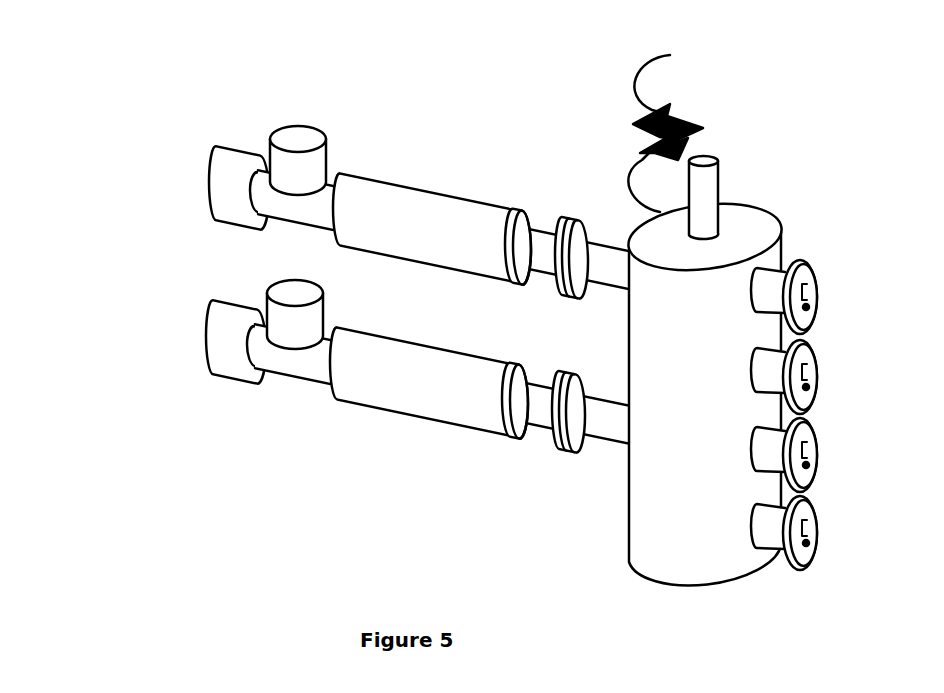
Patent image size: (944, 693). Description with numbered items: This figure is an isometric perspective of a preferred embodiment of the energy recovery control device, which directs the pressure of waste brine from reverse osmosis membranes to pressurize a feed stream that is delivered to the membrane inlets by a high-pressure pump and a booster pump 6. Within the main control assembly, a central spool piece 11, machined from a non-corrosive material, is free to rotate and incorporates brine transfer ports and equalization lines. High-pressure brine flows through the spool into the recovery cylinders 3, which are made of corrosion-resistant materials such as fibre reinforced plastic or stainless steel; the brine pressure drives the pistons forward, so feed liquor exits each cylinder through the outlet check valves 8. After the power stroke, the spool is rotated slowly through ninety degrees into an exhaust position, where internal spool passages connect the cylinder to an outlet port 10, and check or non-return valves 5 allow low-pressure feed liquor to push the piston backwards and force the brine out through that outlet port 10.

The recovery cylinders 3 is at (725, 168).
The check or non-return valves 5 is at (820, 442).
The booster pump 6 is at (458, 253).
The outlet check valves 8 is at (268, 128).
The outlet port 10 is at (820, 520).
The central spool piece 11 is at (197, 328).